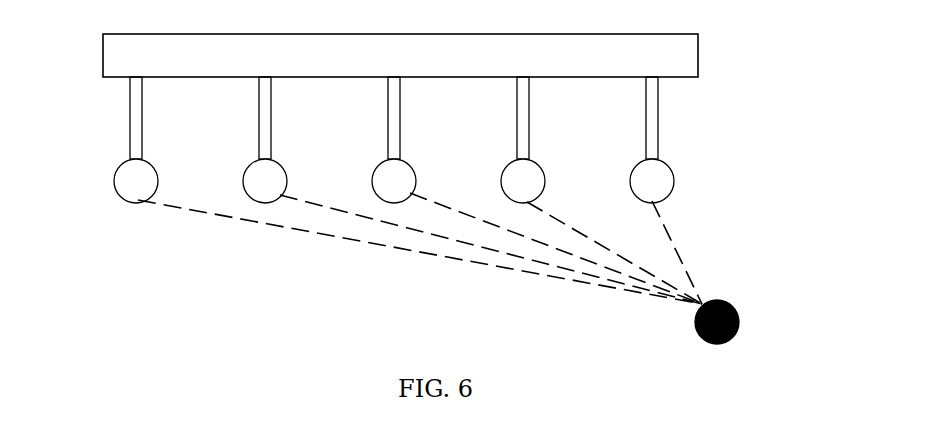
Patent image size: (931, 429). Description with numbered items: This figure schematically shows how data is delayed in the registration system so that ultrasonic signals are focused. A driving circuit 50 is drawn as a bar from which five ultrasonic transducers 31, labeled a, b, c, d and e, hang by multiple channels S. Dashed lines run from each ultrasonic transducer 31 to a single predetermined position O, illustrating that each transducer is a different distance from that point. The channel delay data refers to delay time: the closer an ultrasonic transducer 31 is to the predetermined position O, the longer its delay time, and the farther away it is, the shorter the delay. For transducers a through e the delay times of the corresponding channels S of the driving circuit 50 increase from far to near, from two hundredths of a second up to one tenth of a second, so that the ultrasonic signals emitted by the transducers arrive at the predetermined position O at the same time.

The driving circuit 50 is at (633, 53).
The channels S is at (130, 115).
The ultrasonic transducer 31 is at (113, 182).
The predetermined position O is at (726, 305).